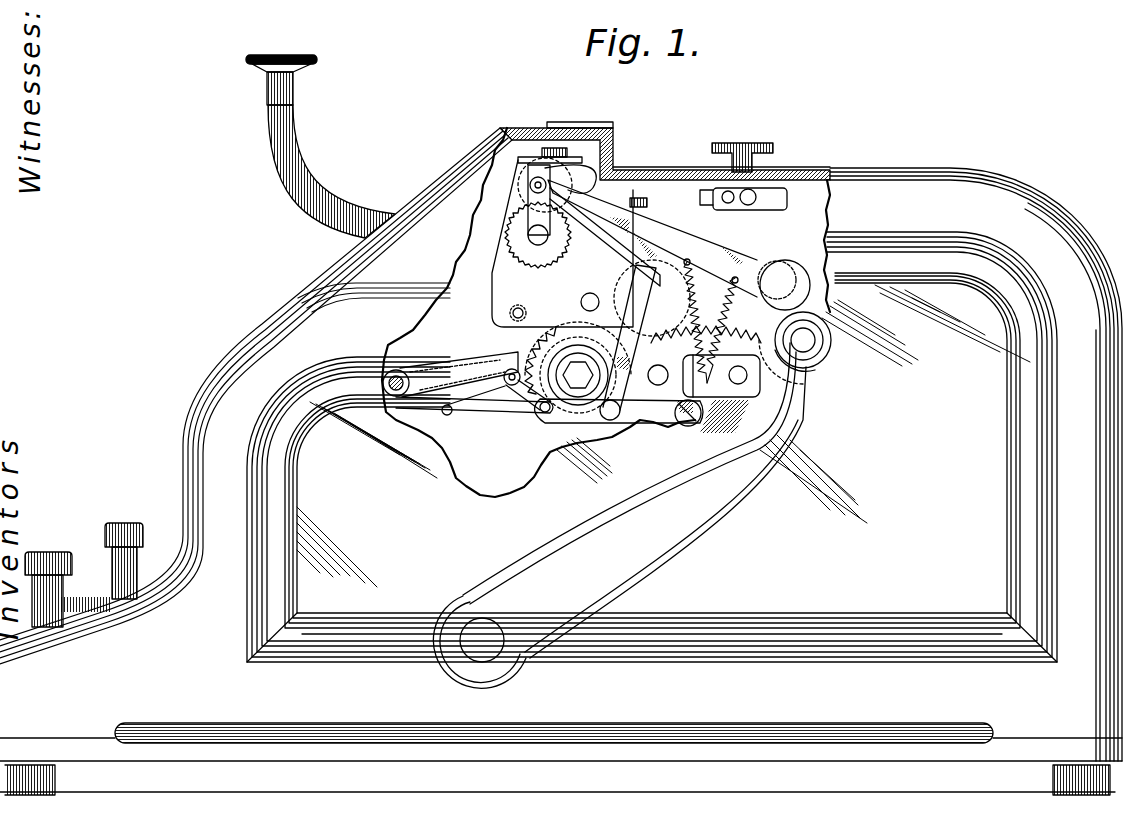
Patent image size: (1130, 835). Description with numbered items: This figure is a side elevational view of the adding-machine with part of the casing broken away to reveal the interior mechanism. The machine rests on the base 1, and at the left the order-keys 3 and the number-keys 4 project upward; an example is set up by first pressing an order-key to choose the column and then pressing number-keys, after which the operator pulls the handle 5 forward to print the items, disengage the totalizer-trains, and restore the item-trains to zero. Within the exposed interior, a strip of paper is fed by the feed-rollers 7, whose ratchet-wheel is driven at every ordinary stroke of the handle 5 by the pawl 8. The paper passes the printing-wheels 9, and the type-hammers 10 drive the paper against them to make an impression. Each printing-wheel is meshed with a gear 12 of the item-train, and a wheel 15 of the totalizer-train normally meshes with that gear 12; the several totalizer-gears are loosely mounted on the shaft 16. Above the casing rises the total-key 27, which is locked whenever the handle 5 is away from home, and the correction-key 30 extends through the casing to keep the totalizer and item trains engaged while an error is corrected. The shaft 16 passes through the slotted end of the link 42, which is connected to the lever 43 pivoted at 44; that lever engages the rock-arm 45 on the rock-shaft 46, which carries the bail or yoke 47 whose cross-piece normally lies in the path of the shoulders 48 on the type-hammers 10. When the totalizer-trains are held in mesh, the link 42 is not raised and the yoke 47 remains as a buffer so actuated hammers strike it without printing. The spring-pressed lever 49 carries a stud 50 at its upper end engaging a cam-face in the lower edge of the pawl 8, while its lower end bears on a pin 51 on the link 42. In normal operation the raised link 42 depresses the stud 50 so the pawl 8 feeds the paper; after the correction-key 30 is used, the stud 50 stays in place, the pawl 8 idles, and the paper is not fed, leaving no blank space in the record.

The base 1 is at (633, 752).
The order-keys 3 is at (118, 523).
The number-keys 4 is at (48, 552).
The handle 5 is at (685, 518).
The feed-rollers 7 is at (503, 197).
The pawl 8 is at (679, 245).
The printing-wheels 9 is at (556, 350).
The type-hammers 10 is at (507, 384).
The gear 12 is at (633, 385).
The wheel 15 is at (696, 322).
The shaft 16 is at (633, 297).
The total-key 27 is at (310, 176).
The correction-key 30 is at (747, 150).
The link 42 is at (622, 402).
The lever 43 is at (633, 417).
The pivot 44 is at (688, 425).
The rock-arm 45 is at (492, 381).
The rock-shaft 46 is at (392, 393).
The bail or yoke 47 is at (437, 370).
The shoulders 48 is at (497, 366).
The spring-pressed lever 49 is at (620, 237).
The stud 50 is at (590, 207).
The pin 51 is at (650, 283).